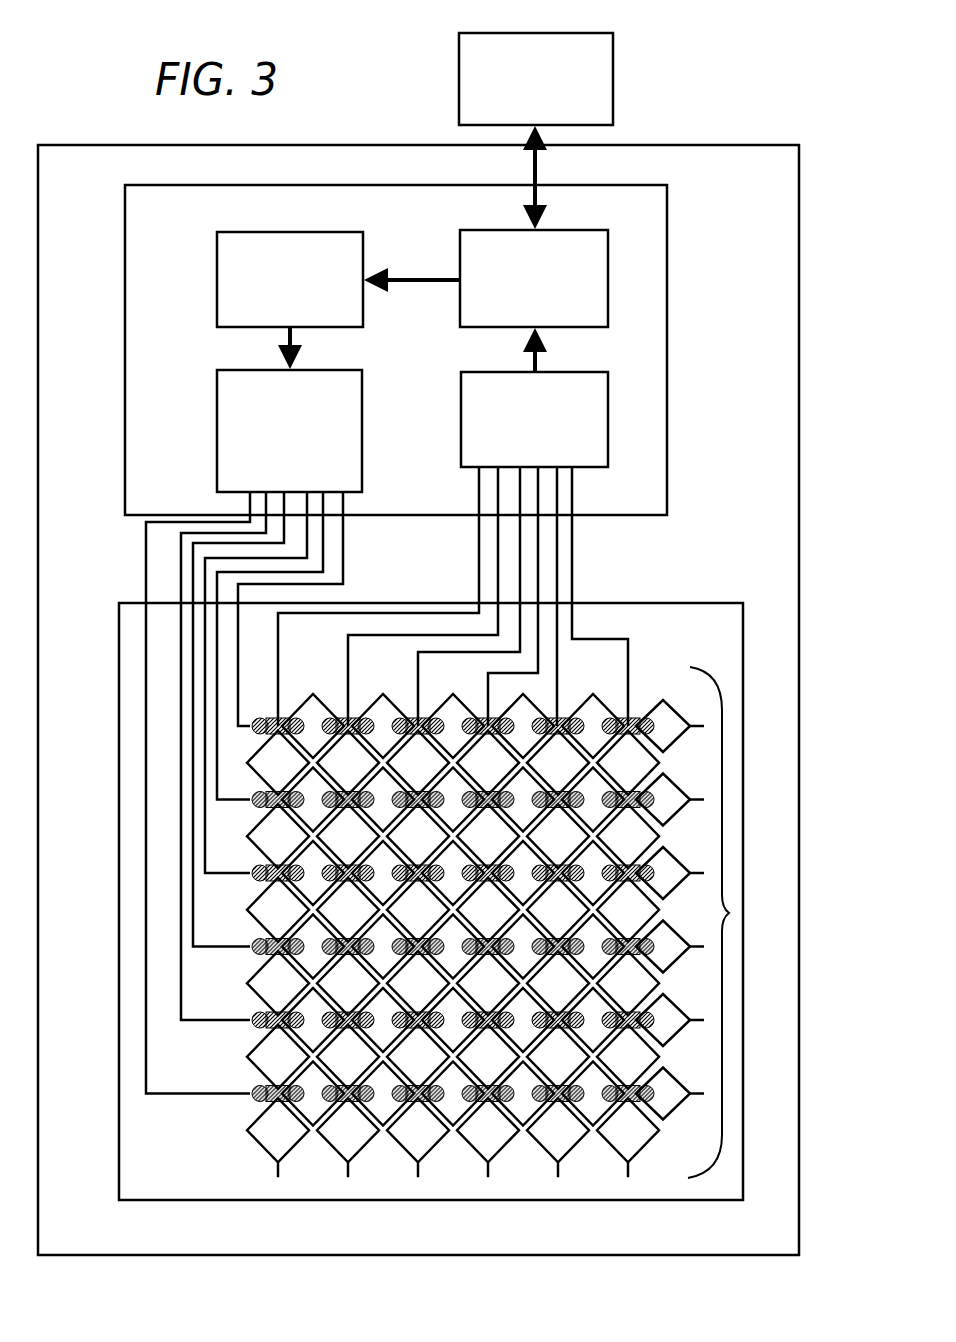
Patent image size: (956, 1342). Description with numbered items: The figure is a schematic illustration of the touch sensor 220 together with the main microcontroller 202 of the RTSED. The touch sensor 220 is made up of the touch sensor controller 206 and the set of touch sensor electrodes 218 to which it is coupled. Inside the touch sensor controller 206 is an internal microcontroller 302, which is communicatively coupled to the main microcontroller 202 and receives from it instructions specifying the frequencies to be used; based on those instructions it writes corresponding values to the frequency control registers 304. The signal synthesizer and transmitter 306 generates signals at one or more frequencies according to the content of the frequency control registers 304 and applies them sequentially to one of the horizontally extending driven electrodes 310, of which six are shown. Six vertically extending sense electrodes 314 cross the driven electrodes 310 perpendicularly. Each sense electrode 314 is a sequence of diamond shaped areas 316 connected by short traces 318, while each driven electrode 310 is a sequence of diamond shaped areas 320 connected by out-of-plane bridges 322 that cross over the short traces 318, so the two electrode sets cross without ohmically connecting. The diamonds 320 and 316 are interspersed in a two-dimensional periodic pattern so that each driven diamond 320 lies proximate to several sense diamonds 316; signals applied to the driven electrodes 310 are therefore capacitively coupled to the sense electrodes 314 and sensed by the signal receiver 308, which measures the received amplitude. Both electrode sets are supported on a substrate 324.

The main microcontroller 202 is at (613, 33).
The touch sensor 220 is at (803, 144).
The touch sensor controller 206 is at (667, 186).
The internal microcontroller 302 is at (608, 233).
The frequency control registers 304 is at (217, 280).
The signal synthesizer and transmitter 306 is at (243, 370).
The signal receiver 308 is at (461, 374).
The touch sensor electrodes 218 is at (727, 913).
The horizontally extending driven electrodes 310 is at (252, 870).
The out-of-plane bridges 322 is at (252, 1090).
The vertically extending sense electrodes 314 is at (630, 767).
The diamond shaped areas 316 is at (620, 1133).
The diamond shaped areas 320 is at (688, 863).
The short traces 318 is at (670, 1003).
The substrate 324 is at (742, 1145).